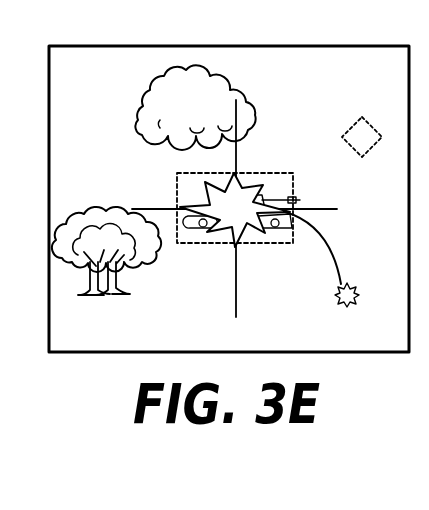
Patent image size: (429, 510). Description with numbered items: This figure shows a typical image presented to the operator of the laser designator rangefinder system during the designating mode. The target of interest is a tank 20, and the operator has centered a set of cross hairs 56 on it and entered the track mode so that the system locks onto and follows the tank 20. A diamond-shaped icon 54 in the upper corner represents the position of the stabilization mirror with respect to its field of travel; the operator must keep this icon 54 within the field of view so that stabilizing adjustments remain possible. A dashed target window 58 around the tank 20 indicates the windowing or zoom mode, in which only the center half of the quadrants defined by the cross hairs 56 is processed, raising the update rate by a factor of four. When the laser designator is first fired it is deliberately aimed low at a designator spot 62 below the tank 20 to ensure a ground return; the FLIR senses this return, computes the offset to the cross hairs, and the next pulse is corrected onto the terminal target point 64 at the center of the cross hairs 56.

The tank 20 is at (293, 216).
The icon 54 is at (352, 121).
The cross hairs 56 is at (237, 148).
The target window 58 is at (294, 184).
The designator spot 62 is at (360, 296).
The terminal target point 64 is at (253, 190).